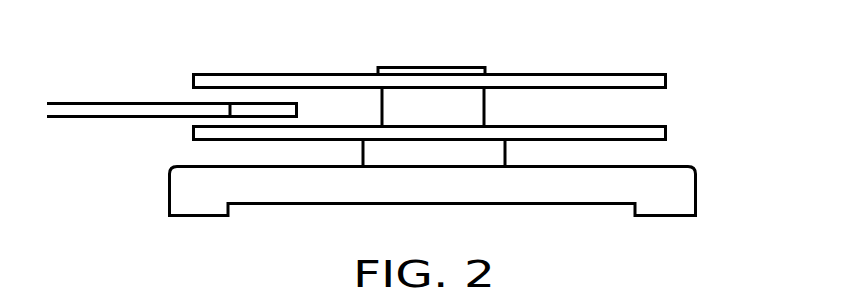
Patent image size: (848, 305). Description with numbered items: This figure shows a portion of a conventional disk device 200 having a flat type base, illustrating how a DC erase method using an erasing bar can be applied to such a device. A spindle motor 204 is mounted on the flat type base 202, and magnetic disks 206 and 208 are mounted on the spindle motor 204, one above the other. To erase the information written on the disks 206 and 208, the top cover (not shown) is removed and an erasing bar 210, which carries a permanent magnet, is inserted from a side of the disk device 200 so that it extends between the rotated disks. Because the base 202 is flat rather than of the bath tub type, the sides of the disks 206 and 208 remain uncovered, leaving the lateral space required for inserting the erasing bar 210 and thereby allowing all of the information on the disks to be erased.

The disk device 200 is at (125, 32).
The flat type base 202 is at (685, 187).
The spindle motor 204 is at (442, 67).
The magnetic disk 206 is at (667, 127).
The magnetic disk 208 is at (655, 82).
The erasing bar 210 is at (120, 118).